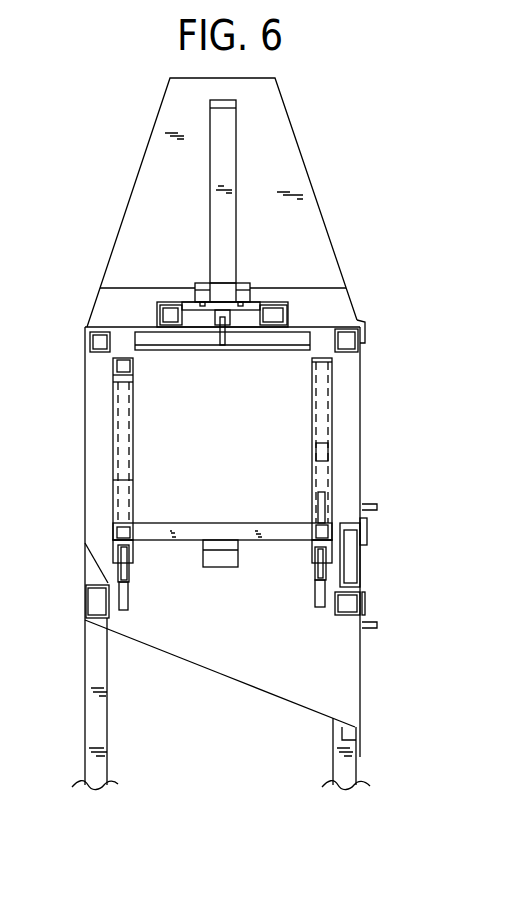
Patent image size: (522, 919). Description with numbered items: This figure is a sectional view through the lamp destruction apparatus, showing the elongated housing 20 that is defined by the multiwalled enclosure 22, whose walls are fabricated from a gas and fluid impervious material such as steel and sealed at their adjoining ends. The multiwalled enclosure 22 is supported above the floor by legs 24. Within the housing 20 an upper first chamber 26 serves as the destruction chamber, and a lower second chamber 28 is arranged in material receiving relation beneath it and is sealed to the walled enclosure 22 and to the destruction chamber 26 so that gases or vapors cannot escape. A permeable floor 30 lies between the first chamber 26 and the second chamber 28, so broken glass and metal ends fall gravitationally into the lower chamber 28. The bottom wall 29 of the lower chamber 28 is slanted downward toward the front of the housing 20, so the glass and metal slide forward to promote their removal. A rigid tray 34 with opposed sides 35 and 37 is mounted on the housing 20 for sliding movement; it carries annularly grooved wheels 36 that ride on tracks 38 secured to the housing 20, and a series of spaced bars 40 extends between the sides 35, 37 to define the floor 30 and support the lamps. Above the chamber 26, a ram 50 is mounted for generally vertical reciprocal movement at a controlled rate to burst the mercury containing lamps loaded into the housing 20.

The elongated housing 20 is at (325, 163).
The multiwalled enclosure 22 is at (157, 176).
The legs 24 is at (107, 756).
The first chamber 26 is at (85, 438).
The second chamber 28 is at (212, 668).
The bottom wall 29 is at (290, 702).
The permeable floor 30 is at (176, 523).
The rigid tray 34 is at (135, 432).
The side 35 is at (312, 404).
The annularly grooved wheels 36 is at (133, 562).
The side 37 is at (133, 450).
The tracks 38 is at (130, 596).
The spaced bars 40 is at (270, 532).
The ram 50 is at (293, 317).